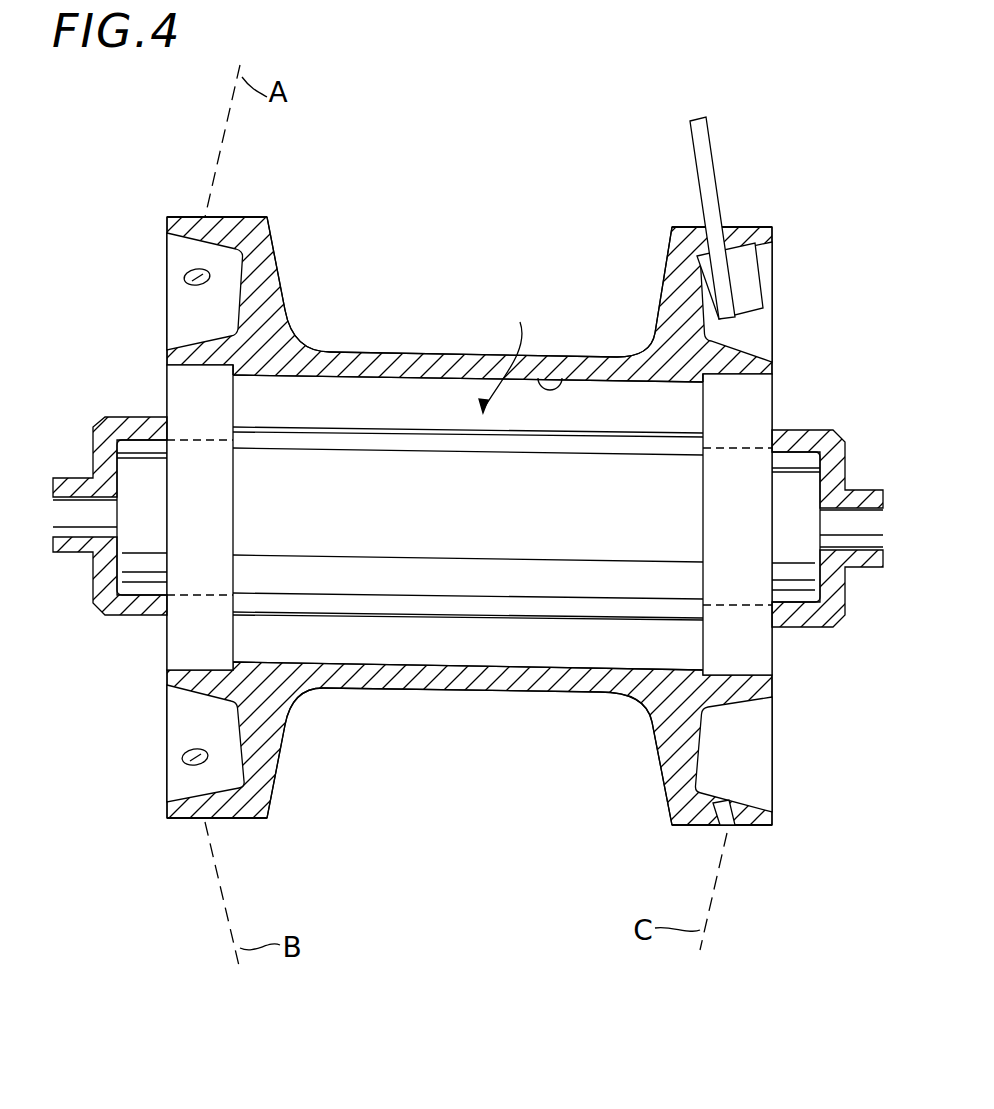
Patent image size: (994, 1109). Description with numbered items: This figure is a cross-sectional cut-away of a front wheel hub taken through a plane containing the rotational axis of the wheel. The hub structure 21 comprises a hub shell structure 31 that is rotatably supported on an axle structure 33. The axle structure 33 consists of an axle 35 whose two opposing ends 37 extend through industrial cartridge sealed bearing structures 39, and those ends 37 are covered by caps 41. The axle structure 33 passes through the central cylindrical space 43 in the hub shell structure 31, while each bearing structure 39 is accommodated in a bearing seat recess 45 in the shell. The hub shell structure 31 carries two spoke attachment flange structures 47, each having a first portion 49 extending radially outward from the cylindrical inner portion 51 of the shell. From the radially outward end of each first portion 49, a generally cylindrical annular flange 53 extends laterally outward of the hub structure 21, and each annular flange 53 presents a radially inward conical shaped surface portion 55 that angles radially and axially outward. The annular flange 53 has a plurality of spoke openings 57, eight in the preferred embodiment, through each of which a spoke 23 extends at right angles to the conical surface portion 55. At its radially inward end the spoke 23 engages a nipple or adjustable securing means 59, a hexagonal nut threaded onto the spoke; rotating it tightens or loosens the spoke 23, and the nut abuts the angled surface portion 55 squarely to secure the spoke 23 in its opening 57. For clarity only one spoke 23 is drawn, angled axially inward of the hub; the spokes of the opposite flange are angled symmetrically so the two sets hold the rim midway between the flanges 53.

The hub structure 21 is at (288, 203).
The spoke 23 is at (692, 155).
The hub shell structure 31 is at (390, 367).
The axle structure 33 is at (508, 351).
The axle 35 is at (483, 588).
The axle ends 37 is at (140, 470).
The industrial cartridge sealed bearing structure 39 is at (213, 502).
The cap 41 is at (115, 603).
The central cylindrical space 43 is at (550, 385).
The bearing seat recess 45 is at (218, 374).
The spoke attachment flange structure 47 is at (247, 218).
The first portion 49 is at (265, 270).
The cylindrical inner portion 51 is at (423, 362).
The annular flange 53 is at (192, 218).
The conical shaped surface portion 55 is at (187, 245).
The spoke opening 57 is at (187, 278).
The nipple or adjustable securing means 59 is at (750, 285).